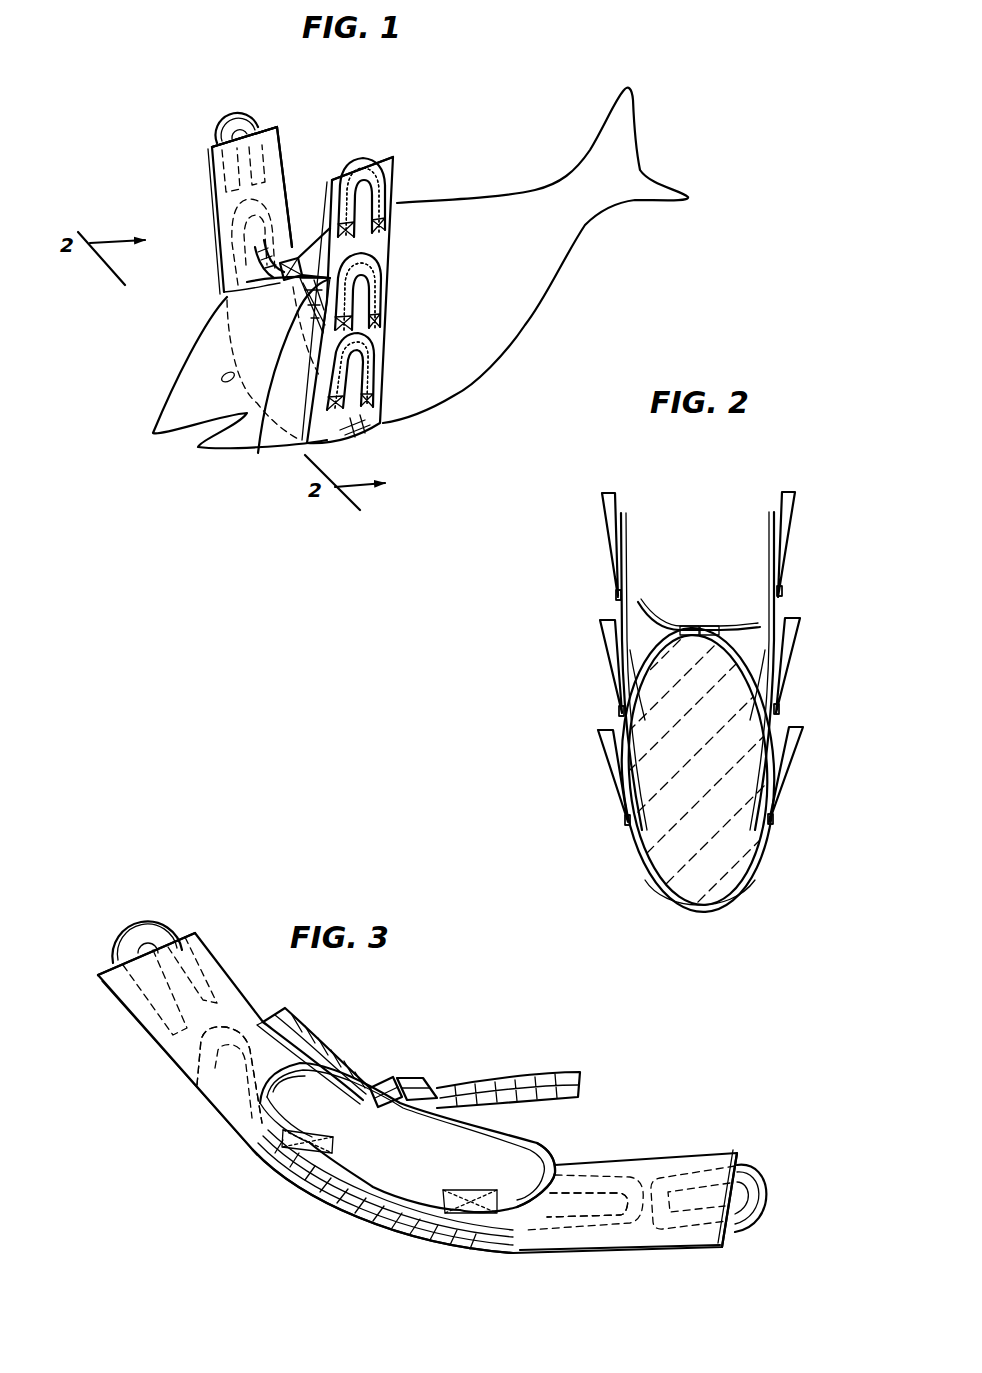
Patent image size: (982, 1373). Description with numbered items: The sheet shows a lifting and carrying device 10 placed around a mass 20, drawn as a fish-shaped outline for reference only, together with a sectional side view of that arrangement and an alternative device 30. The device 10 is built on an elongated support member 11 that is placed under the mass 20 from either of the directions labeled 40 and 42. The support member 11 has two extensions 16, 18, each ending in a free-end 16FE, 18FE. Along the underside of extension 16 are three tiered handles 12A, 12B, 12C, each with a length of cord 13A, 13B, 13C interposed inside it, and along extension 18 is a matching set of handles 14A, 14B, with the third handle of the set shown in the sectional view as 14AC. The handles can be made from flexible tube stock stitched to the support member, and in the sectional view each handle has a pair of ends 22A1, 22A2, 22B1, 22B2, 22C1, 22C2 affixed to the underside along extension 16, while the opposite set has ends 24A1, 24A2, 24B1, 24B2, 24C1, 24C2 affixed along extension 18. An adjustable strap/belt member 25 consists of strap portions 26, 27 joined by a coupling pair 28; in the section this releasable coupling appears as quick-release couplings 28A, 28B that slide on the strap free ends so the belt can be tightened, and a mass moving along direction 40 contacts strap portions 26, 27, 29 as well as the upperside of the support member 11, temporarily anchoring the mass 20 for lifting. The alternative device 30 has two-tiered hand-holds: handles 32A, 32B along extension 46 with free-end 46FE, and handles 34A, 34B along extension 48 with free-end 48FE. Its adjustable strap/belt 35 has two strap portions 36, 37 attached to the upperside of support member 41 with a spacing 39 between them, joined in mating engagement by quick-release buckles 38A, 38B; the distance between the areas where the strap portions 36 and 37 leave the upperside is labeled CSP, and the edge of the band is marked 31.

In FIG. 1, the device 10 is at (185, 128).
In FIG. 2, the device 10 is at (583, 868).
In FIG. 1, the elongated support member 11 is at (270, 150).
In FIG. 2, the elongated support member 11 is at (750, 895).
In FIG. 1, the handle 12A is at (398, 182).
In FIG. 2, the handle 12A is at (792, 515).
In FIG. 1, the handle 12B is at (385, 290).
In FIG. 2, the handle 12B is at (798, 648).
In FIG. 1, the handle 12C is at (375, 368).
In FIG. 2, the handle 12C is at (800, 750).
In FIG. 1, the length of cord 13A is at (372, 157).
In FIG. 1, the length of cord 13B is at (383, 306).
In FIG. 1, the length of cord 13C is at (377, 407).
In FIG. 1, the handle 14A is at (255, 112).
In FIG. 2, the handle 14A is at (612, 515).
In FIG. 2, the handle 14B is at (606, 648).
In FIG. 2, the third flap of strap 18 14AC is at (602, 755).
In FIG. 1, the extension 16 is at (400, 233).
In FIG. 2, the extension 16 is at (766, 537).
In FIG. 1, the free-end 16FE is at (388, 142).
In FIG. 1, the extension 18 is at (185, 200).
In FIG. 2, the extension 18 is at (632, 530).
In FIG. 1, the free-end 18FE is at (208, 143).
In FIG. 1, the mass 20 is at (502, 312).
In FIG. 2, the mass 20 is at (716, 762).
In FIG. 2, the handle end 22A1 is at (786, 588).
In FIG. 2, the handle end 22A2 is at (779, 591).
In FIG. 2, the handle end 22B1 is at (785, 700).
In FIG. 2, the handle end 22B2 is at (776, 709).
In FIG. 2, the handle end 22C1 is at (782, 816).
In FIG. 2, the handle end 22C2 is at (770, 819).
In FIG. 2, the handle end 24A1 is at (614, 590).
In FIG. 2, the handle end 24A2 is at (618, 595).
In FIG. 2, the handle end 24B1 is at (616, 708).
In FIG. 2, the handle end 24B2 is at (621, 711).
In FIG. 2, the handle end 24C1 is at (620, 820).
In FIG. 2, the handle end 24C2 is at (627, 820).
In FIG. 1, the adjustable strap/belt member 25 is at (292, 247).
In FIG. 2, the adjustable strap/belt member 25 is at (703, 600).
In FIG. 1, the strap portion 26 is at (240, 292).
In FIG. 2, the strap portion 26 is at (648, 662).
In FIG. 1, the strap portion 27 is at (258, 450).
In FIG. 2, the strap portion 27 is at (752, 662).
In FIG. 1, the coupling pair 28 is at (283, 288).
In FIG. 2, the quick-release coupling 28A is at (685, 625).
In FIG. 2, the quick-release coupling 28B is at (707, 627).
In FIG. 2, the strap portion 29 is at (712, 908).
In FIG. 3, the alternative device 30 is at (662, 1115).
In FIG. 3, the band edge 31 is at (513, 1257).
In FIG. 3, the handle 32A is at (760, 1223).
In FIG. 3, the handle 32B is at (603, 1232).
In FIG. 3, the handle 34A is at (128, 935).
In FIG. 3, the handle 34B is at (197, 1087).
In FIG. 3, the adjustable strap/belt 35 is at (488, 1060).
In FIG. 3, the strap portion 36 is at (258, 1168).
In FIG. 3, the strap portion 37 is at (553, 1147).
In FIG. 3, the quick-release buckle 38A is at (393, 1078).
In FIG. 3, the quick-release buckle 38B is at (417, 1085).
In FIG. 3, the spacing 39 is at (370, 1190).
In FIG. 1, the direction 40 is at (145, 378).
In FIG. 2, the direction 40 is at (672, 910).
In FIG. 3, the direction 40 is at (318, 1233).
In FIG. 3, the support member 41 is at (677, 1240).
In FIG. 1, the direction 42 is at (487, 180).
In FIG. 3, the extension 46 is at (653, 1258).
In FIG. 3, the free-end 46FE is at (745, 1153).
In FIG. 3, the extension 48 is at (135, 1053).
In FIG. 3, the free-end 48FE is at (180, 928).
In FIG. 3, the distance L_ CSP is at (517, 1173).